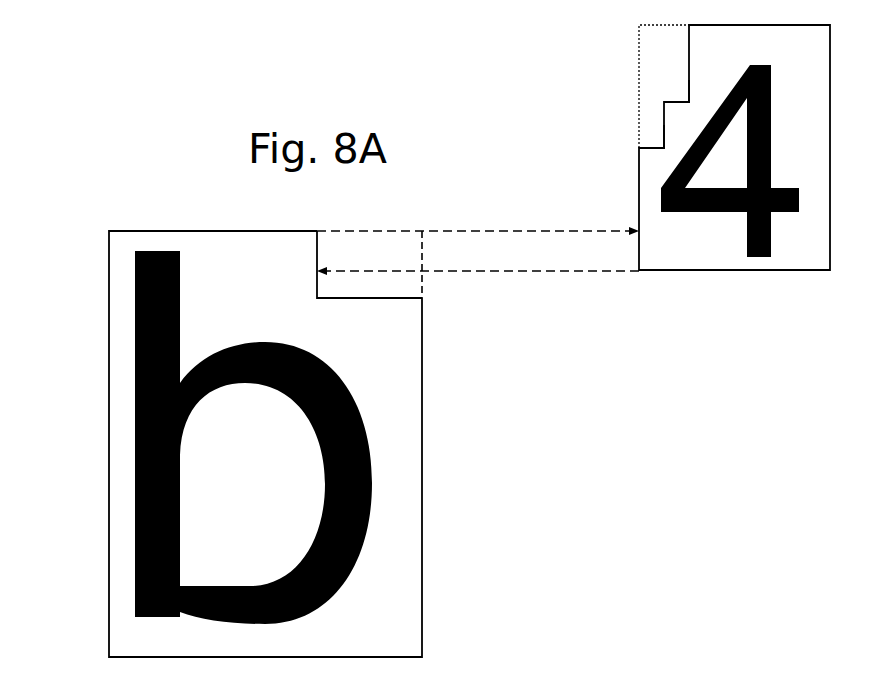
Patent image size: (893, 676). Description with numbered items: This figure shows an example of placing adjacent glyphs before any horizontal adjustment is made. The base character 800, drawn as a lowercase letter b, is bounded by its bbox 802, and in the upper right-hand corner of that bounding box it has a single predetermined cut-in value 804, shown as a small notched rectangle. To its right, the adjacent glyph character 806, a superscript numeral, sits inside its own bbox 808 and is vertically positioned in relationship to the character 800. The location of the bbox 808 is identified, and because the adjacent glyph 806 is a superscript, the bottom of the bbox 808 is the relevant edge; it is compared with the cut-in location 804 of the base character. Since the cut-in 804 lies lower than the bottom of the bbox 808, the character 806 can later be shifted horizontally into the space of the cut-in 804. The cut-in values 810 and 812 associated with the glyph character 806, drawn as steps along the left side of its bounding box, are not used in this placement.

The character 800 is at (135, 436).
The bbox 802 is at (109, 530).
The cut-in value 804 is at (383, 293).
The adjacent glyph character 806 is at (758, 257).
The bbox 808 is at (735, 270).
The cut-in value 810 is at (656, 145).
The cut-in value 812 is at (681, 100).